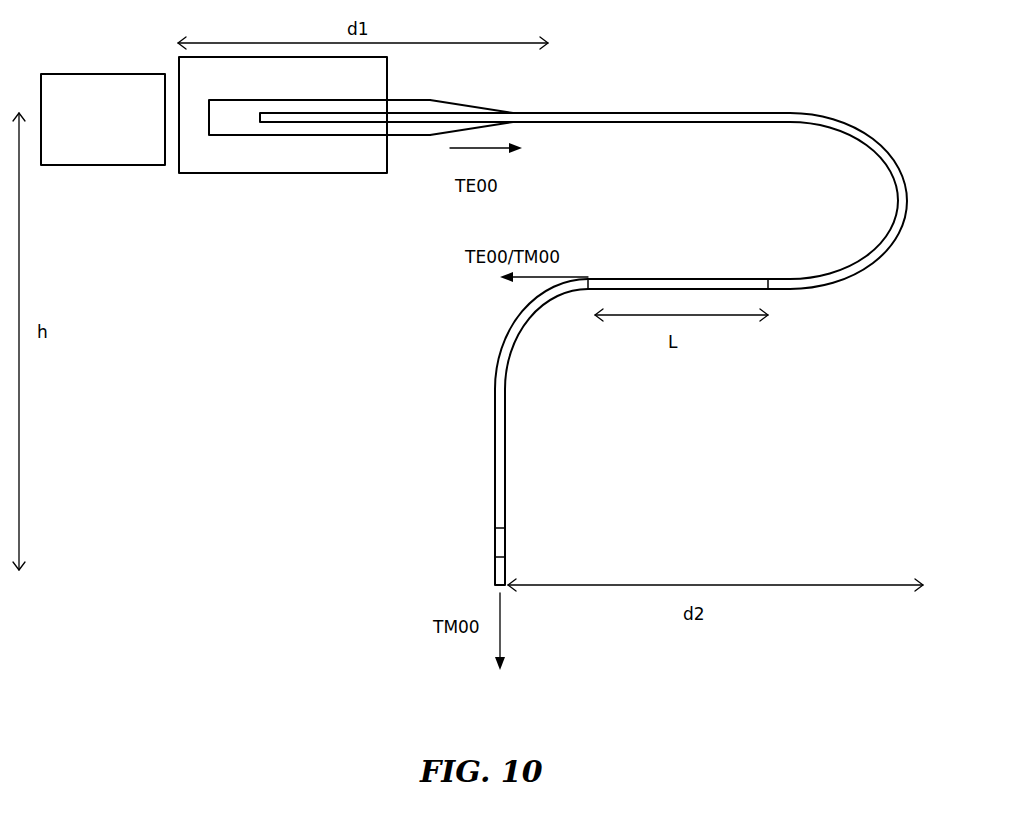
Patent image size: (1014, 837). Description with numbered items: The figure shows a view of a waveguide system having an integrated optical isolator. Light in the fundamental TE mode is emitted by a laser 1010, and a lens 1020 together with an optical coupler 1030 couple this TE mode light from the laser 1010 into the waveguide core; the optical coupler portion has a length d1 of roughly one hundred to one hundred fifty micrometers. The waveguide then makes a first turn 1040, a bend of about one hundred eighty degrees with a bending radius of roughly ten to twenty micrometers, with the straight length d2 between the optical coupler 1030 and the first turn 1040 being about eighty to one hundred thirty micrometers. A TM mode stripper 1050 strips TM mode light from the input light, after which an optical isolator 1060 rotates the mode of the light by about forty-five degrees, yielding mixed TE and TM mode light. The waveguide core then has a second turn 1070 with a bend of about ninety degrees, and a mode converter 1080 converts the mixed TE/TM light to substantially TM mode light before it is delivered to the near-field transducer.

The laser 1010 is at (100, 72).
The lens 1020 is at (203, 165).
The optical coupler 1030 is at (303, 140).
The first turn 1040 is at (906, 197).
The TM mode stripper 1050 is at (790, 277).
The optical isolator 1060 is at (713, 278).
The second turn 1070 is at (533, 307).
The mode converter 1080 is at (494, 540).